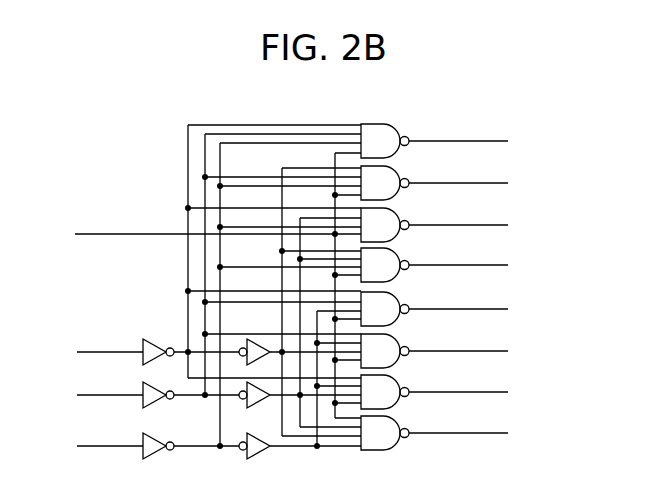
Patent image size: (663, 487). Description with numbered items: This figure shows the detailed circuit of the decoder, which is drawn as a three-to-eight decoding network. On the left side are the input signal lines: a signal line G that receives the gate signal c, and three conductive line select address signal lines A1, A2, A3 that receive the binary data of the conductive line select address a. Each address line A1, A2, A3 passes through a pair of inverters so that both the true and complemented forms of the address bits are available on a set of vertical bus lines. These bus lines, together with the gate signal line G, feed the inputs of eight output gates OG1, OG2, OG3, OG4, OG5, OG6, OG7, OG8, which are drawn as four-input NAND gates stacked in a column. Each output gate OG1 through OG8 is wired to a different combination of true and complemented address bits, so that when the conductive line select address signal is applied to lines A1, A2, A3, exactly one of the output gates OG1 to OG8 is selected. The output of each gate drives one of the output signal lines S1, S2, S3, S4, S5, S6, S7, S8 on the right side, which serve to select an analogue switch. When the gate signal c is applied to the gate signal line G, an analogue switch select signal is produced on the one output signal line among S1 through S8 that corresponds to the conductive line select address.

The signal line G is at (94, 233).
The conductive line select address signal line A1 is at (113, 351).
The conductive line select address signal line A2 is at (118, 395).
The conductive line select address signal line A3 is at (124, 445).
The output gate OG1 is at (398, 125).
The output gate OG2 is at (400, 174).
The output gate OG3 is at (400, 216).
The output gate OG4 is at (400, 256).
The output gate OG5 is at (400, 295).
The output gate OG6 is at (400, 337).
The output gate OG7 is at (400, 378).
The output gate OG8 is at (400, 419).
The output signal line S1 is at (492, 141).
The output signal line S2 is at (492, 183).
The output signal line S3 is at (492, 225).
The output signal line S4 is at (492, 265).
The output signal line S5 is at (492, 309).
The output signal line S6 is at (492, 351).
The output signal line S7 is at (492, 392).
The output signal line S8 is at (492, 433).